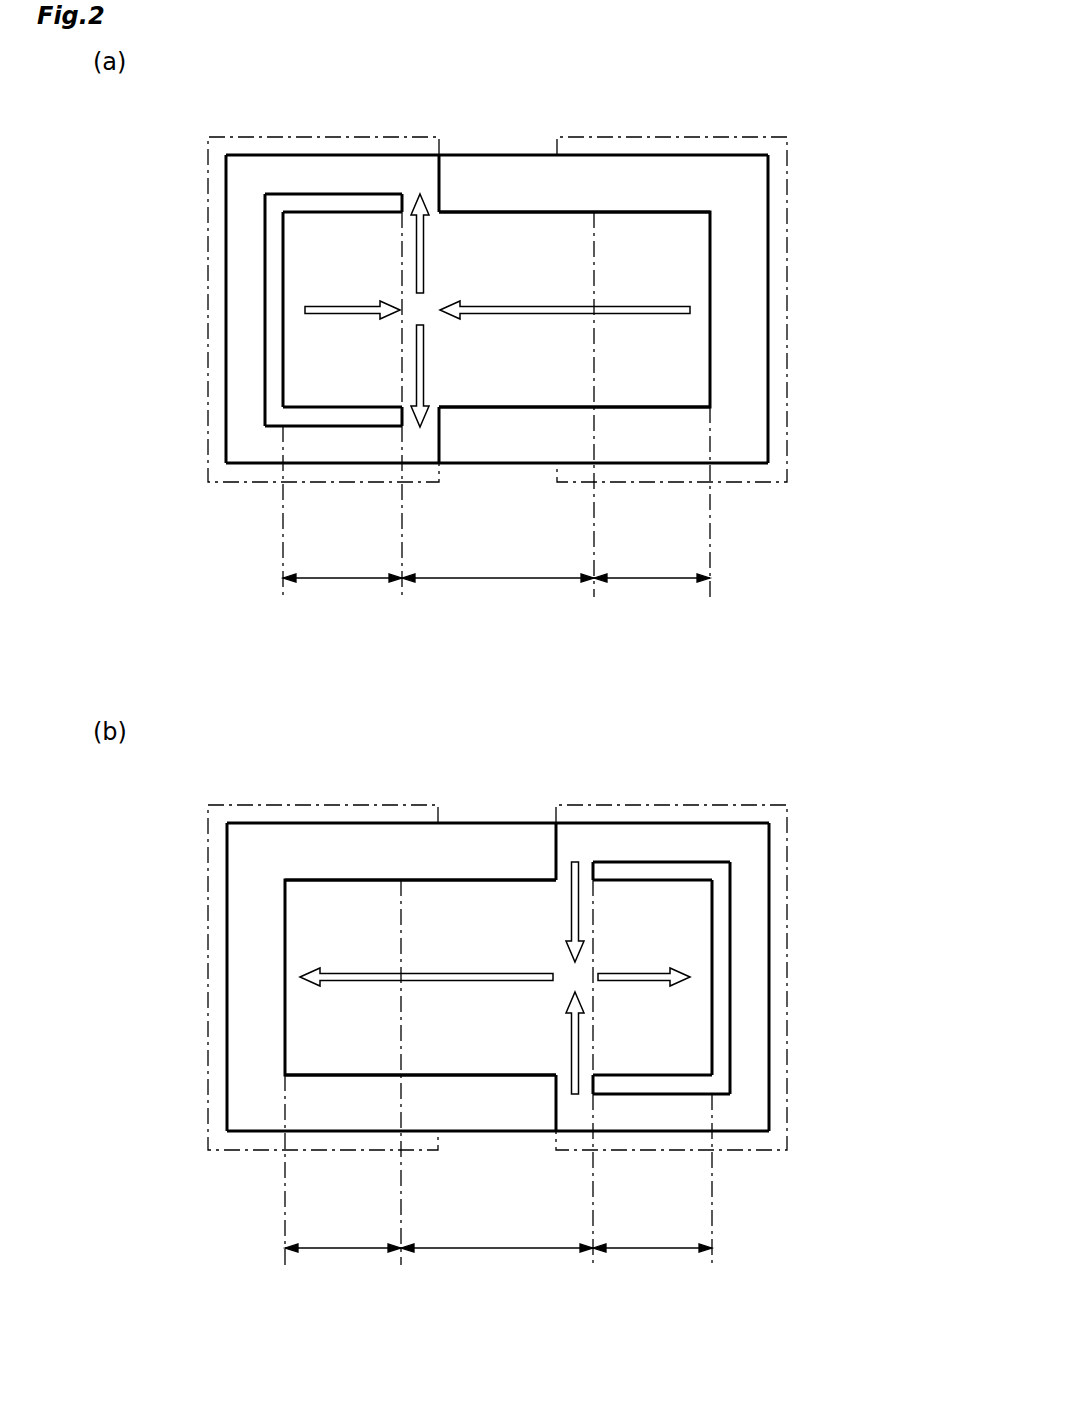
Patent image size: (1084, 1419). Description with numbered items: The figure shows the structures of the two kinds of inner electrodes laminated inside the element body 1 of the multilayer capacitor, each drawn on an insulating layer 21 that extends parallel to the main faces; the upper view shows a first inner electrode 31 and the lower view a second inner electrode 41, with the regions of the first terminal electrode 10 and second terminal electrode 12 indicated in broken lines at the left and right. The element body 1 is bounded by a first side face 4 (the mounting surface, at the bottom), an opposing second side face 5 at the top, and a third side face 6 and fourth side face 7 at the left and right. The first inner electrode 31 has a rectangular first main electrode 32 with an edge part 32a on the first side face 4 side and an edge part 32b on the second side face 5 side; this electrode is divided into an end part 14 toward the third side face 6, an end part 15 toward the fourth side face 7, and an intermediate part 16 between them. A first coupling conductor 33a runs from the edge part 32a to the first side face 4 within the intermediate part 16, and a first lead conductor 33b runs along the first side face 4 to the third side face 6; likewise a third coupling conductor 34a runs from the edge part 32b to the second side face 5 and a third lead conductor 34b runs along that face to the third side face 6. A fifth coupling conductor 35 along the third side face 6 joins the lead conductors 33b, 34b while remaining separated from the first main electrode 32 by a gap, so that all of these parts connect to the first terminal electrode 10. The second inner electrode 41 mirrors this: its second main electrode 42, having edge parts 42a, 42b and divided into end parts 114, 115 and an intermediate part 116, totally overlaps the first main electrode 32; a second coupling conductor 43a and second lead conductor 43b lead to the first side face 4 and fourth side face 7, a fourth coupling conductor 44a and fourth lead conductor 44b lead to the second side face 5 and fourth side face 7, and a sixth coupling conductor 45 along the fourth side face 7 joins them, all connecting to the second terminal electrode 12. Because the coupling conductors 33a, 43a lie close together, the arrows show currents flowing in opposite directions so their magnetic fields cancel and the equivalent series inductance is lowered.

The element body 1 is at (519, 464).
The first side face 4 is at (662, 468).
The second side face 5 is at (640, 155).
The third side face 6 is at (225, 378).
The fourth side face 7 is at (770, 300).
The first terminal electrode 10 is at (250, 136).
The second terminal electrode 12 is at (722, 137).
The end part 14 is at (338, 580).
The end part 15 is at (648, 580).
The intermediate part 16 is at (497, 580).
The insulating layer 21 is at (510, 168).
The first inner electrode 31 is at (440, 172).
The first main electrode 32 is at (685, 248).
The edge part 32a is at (500, 408).
The edge part 32b is at (532, 210).
The first coupling conductor 33a is at (423, 445).
The first lead conductor 33b is at (307, 445).
The third coupling conductor 34a is at (415, 172).
The third lead conductor 34b is at (300, 175).
The fifth coupling conductor 35 is at (240, 272).
The second inner electrode 41 is at (555, 838).
The second main electrode 42 is at (310, 917).
The edge part 42a is at (493, 1076).
The edge part 42b is at (463, 878).
The second coupling conductor 43a is at (572, 1112).
The second lead conductor 43b is at (672, 1112).
The fourth coupling conductor 44a is at (582, 837).
The fourth lead conductor 44b is at (702, 837).
The sixth coupling conductor 45 is at (757, 938).
The end part 114 is at (338, 1250).
The end part 115 is at (648, 1250).
The intermediate part 116 is at (497, 1250).